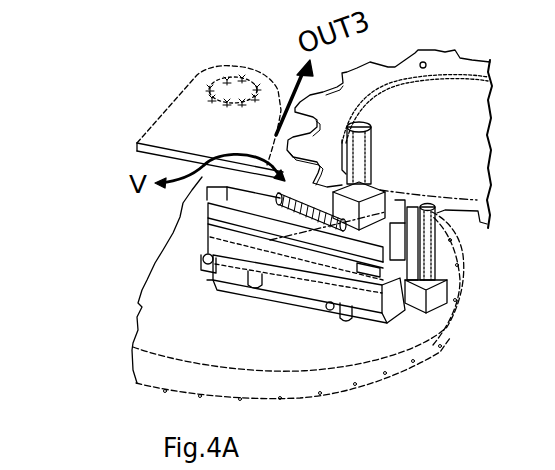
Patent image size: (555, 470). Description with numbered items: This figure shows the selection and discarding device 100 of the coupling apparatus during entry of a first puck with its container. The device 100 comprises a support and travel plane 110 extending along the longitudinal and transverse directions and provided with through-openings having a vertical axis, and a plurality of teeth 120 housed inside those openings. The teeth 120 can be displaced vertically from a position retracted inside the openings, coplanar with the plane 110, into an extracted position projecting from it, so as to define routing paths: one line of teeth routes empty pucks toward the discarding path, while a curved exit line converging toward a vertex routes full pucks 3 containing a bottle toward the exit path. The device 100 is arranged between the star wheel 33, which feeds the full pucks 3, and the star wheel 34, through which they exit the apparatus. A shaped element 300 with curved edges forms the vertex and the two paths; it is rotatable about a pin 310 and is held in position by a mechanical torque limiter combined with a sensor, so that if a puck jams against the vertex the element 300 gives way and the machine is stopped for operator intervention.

The selection and discarding device 100 is at (176, 220).
The support and travel plane 110 is at (250, 196).
The teeth 120 is at (310, 217).
The shaped element 300 is at (165, 139).
The pin 310 is at (234, 90).
The full puck 3 is at (385, 173).
The star wheel 33 is at (432, 333).
The star wheel 34 is at (423, 66).